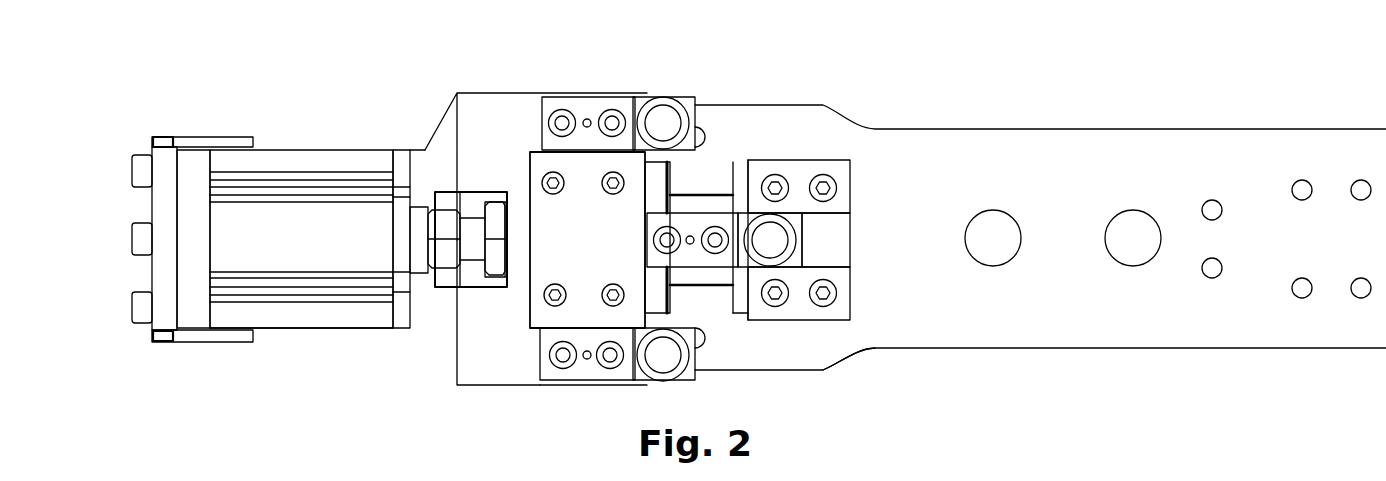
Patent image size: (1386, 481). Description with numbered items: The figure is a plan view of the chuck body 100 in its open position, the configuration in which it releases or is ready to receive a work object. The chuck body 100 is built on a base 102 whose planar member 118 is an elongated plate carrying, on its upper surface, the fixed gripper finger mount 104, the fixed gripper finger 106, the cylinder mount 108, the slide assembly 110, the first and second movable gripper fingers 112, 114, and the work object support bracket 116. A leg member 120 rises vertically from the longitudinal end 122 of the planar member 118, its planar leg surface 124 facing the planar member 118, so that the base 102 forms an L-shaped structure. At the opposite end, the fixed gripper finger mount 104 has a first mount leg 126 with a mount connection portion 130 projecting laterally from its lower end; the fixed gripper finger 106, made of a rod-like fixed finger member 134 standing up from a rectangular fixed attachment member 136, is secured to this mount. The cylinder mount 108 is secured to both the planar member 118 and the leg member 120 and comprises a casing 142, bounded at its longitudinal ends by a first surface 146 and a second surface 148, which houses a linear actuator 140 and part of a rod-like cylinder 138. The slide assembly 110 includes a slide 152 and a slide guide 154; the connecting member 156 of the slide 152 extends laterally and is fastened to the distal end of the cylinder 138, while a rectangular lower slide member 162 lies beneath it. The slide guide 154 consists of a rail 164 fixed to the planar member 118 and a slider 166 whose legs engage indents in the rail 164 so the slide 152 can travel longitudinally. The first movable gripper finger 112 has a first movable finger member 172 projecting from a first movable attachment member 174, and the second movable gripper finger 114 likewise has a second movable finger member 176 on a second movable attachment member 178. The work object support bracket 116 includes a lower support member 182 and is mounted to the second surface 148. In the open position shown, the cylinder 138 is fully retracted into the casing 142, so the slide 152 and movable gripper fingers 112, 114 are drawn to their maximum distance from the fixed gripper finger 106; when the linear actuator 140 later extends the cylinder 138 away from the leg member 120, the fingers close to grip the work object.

The chuck body 100 is at (1123, 73).
The base 102 is at (1048, 106).
The fixed gripper finger mount 104 is at (833, 232).
The fixed gripper finger 106 is at (741, 298).
The cylinder mount 108 is at (280, 96).
The slide assembly 110 is at (518, 111).
The first movable gripper finger 112 is at (560, 77).
The second movable gripper finger 114 is at (582, 391).
The work object support bracket 116 is at (393, 146).
The planar member 118 is at (1160, 160).
The leg member 120 is at (162, 200).
The longitudinal end 122 is at (200, 119).
The planar leg surface 124 is at (178, 182).
The first mount leg 126 is at (833, 256).
The mount connection portion 130 is at (805, 180).
The fixed finger member 134 is at (776, 186).
The fixed attachment member 136 is at (722, 280).
The cylinder 138 is at (443, 230).
The linear actuator 140 is at (335, 137).
The casing 142 is at (283, 303).
The first surface 146 is at (180, 288).
The second surface 148 is at (433, 312).
The slide 152 is at (442, 190).
The slide guide 154 is at (734, 316).
The connecting member 156 is at (478, 308).
The lower slide member 162 is at (628, 203).
The rail 164 is at (733, 162).
The slider 166 is at (650, 290).
The first movable finger member 172 is at (662, 118).
The first movable attachment member 174 is at (593, 107).
The second movable finger member 176 is at (667, 357).
The second movable attachment member 178 is at (580, 368).
The lower support member 182 is at (397, 313).